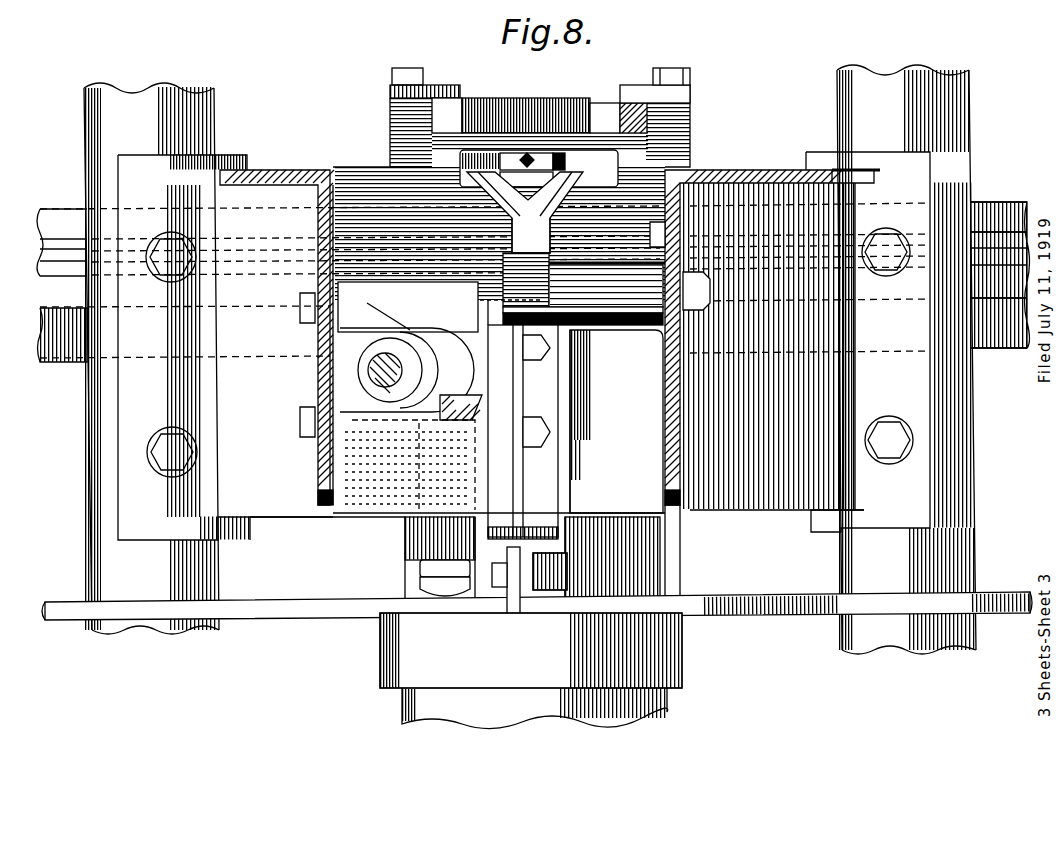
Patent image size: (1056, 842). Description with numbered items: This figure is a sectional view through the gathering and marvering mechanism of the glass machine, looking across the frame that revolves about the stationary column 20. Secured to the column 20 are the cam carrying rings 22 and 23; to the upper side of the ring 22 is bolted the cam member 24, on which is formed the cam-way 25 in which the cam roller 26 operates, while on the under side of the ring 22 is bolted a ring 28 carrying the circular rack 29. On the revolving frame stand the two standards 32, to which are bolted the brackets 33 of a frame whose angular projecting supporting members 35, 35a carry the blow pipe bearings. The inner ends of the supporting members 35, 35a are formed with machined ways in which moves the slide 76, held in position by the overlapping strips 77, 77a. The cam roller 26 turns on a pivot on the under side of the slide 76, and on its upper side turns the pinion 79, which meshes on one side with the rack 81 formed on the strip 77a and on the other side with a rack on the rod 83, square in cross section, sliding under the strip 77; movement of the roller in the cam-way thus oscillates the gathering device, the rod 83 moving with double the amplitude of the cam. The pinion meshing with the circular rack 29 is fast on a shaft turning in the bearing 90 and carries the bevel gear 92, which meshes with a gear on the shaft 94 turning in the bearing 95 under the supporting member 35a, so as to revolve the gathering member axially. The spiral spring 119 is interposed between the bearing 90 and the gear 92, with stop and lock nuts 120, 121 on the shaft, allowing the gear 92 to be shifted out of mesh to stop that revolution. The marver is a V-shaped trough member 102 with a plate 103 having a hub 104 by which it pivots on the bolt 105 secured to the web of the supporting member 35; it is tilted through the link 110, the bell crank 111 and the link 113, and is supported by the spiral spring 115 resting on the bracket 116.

The stationary column 20 is at (670, 672).
The cam carrying ring 22 is at (1032, 240).
The cam carrying ring 23 is at (255, 612).
The cam member 24 is at (977, 238).
The cam-way 25 is at (997, 208).
The cam roller 26 is at (500, 226).
The ring 28 is at (1007, 348).
The circular rack 29 is at (998, 346).
The standard 32 is at (150, 90).
The bracket 33 is at (150, 405).
The supporting member 35 is at (762, 170).
The supporting member 35a is at (275, 170).
The slide 76 is at (562, 140).
The overlapping strip 77 is at (628, 92).
The overlapping strip 77a is at (441, 90).
The pinion 79 is at (530, 114).
The rack 81 is at (452, 113).
The rod 83 is at (650, 104).
The bearing 90 is at (430, 546).
The bevel gear 92 is at (483, 400).
The shaft 94 is at (376, 378).
The bearing 95 is at (372, 348).
The marver member 102 is at (572, 192).
The plate 103 is at (555, 236).
The hub 104 is at (606, 280).
The bolt 105 is at (708, 307).
The link 110 is at (512, 648).
The bell crank 111 is at (546, 646).
The link 113 is at (515, 481).
The spiral spring 115 is at (550, 283).
The bracket 116 is at (594, 330).
The spiral spring 119 is at (410, 458).
The stop nut 120 is at (445, 572).
The lock nut 121 is at (445, 590).